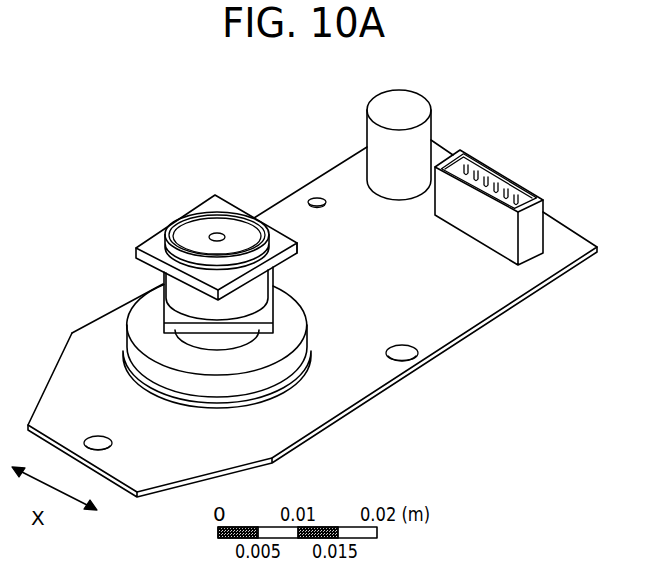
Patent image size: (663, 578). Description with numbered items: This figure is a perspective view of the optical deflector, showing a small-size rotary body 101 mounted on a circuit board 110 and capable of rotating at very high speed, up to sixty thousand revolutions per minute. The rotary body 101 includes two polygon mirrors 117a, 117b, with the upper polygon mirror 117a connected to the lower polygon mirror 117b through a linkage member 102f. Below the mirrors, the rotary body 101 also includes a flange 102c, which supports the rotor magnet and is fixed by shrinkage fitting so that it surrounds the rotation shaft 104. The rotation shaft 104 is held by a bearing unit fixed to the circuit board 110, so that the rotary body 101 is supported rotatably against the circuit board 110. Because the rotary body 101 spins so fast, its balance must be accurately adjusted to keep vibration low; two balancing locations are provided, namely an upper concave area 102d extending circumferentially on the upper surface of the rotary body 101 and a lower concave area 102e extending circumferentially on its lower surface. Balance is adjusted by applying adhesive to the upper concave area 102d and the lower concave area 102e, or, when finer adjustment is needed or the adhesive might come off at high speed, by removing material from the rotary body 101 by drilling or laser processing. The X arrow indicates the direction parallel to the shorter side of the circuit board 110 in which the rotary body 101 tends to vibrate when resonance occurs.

The rotary body 101 is at (187, 188).
The rotation shaft 104 is at (220, 232).
The circuit board 110 is at (283, 210).
The flange 102c is at (178, 385).
The upper concave area 102d is at (163, 236).
The lower concave area 102e is at (145, 395).
The linkage member 102f is at (177, 280).
The polygon mirror 117a is at (303, 245).
The polygon mirror 117b is at (276, 302).